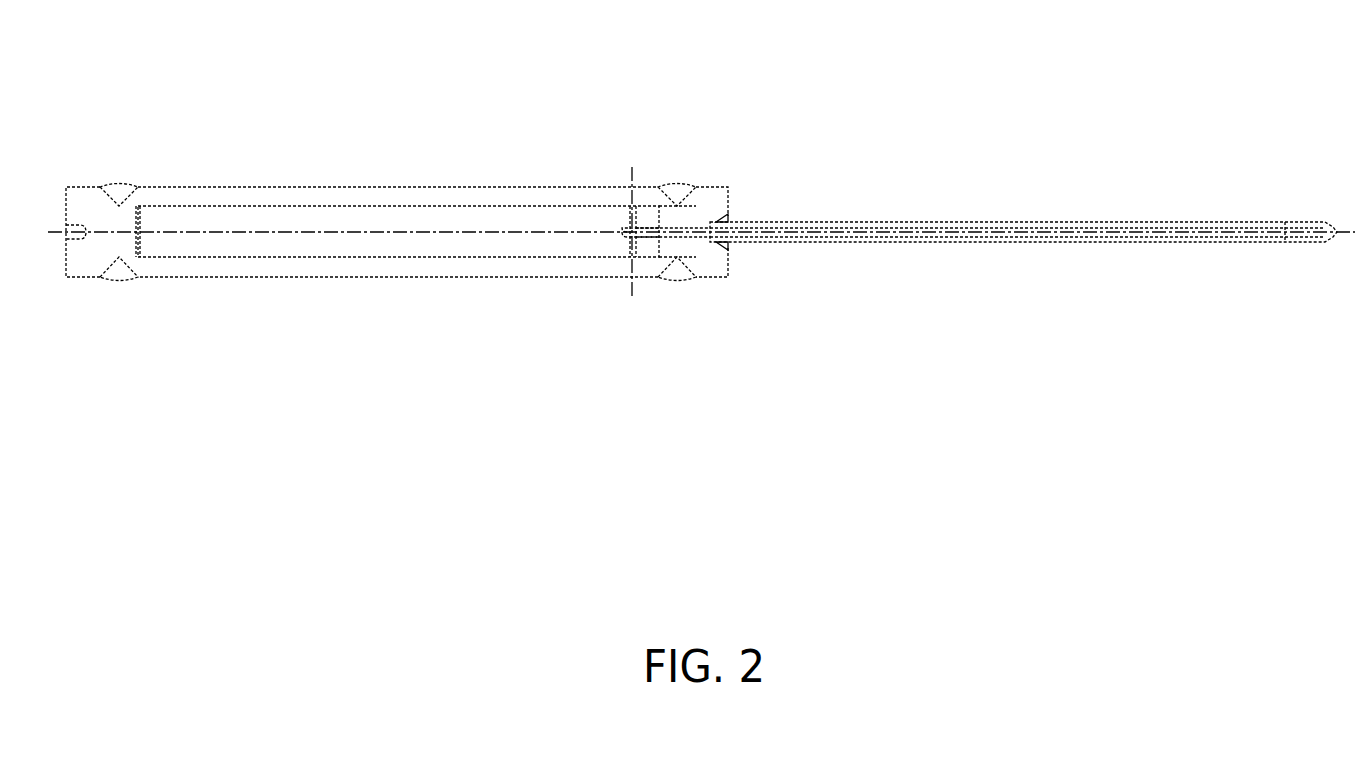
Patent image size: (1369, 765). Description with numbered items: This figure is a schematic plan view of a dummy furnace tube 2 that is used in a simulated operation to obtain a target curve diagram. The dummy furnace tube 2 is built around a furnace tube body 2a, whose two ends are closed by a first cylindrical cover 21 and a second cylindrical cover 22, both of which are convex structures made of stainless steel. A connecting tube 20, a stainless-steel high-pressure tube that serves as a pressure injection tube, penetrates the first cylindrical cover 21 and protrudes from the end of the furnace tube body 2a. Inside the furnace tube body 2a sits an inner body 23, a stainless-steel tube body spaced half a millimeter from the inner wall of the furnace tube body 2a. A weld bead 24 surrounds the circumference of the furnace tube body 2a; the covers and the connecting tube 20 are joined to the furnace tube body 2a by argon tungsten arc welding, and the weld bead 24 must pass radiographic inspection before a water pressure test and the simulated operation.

The dummy furnace tube 2 is at (958, 153).
The furnace tube body 2a is at (345, 279).
The connecting tube 20 is at (1042, 244).
The first cylindrical cover 21 is at (717, 279).
The second cylindrical cover 22 is at (75, 280).
The inner body 23 is at (216, 259).
The weld bead 24 is at (117, 185).